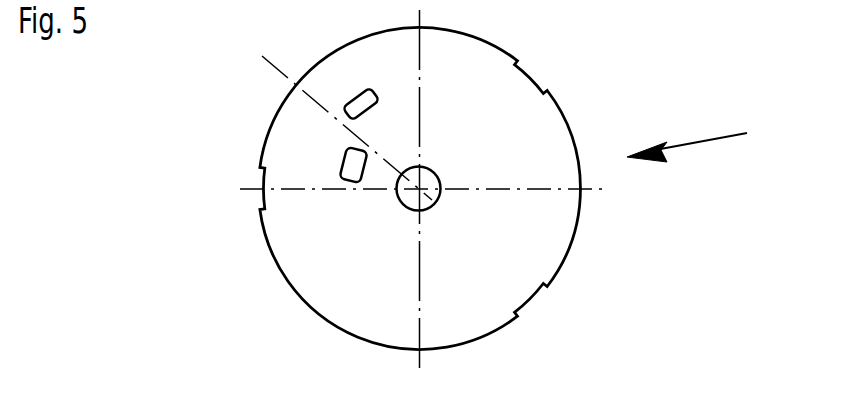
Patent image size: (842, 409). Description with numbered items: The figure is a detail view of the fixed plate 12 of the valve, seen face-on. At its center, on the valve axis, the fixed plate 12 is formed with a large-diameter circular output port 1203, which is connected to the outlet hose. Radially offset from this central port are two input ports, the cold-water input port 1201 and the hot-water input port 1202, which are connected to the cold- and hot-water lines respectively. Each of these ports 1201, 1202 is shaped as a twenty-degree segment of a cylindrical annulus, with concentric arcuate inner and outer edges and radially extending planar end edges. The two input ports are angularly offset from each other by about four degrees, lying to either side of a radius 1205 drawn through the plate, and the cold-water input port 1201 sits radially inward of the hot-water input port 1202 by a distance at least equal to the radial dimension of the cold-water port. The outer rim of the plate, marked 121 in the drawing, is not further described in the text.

The fixed plate 12 is at (694, 141).
The disc body 121 is at (532, 115).
The cold-water input port 1201 is at (353, 164).
The hot-water input port 1202 is at (361, 100).
The circular output port 1203 is at (430, 198).
The radius 1205 is at (253, 51).